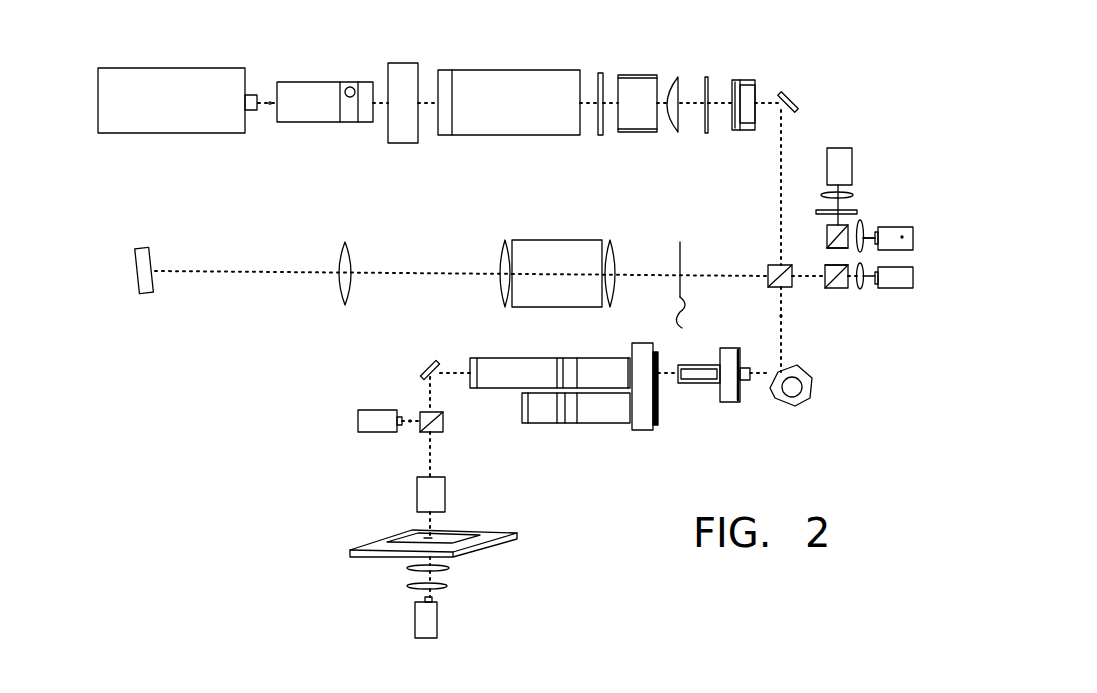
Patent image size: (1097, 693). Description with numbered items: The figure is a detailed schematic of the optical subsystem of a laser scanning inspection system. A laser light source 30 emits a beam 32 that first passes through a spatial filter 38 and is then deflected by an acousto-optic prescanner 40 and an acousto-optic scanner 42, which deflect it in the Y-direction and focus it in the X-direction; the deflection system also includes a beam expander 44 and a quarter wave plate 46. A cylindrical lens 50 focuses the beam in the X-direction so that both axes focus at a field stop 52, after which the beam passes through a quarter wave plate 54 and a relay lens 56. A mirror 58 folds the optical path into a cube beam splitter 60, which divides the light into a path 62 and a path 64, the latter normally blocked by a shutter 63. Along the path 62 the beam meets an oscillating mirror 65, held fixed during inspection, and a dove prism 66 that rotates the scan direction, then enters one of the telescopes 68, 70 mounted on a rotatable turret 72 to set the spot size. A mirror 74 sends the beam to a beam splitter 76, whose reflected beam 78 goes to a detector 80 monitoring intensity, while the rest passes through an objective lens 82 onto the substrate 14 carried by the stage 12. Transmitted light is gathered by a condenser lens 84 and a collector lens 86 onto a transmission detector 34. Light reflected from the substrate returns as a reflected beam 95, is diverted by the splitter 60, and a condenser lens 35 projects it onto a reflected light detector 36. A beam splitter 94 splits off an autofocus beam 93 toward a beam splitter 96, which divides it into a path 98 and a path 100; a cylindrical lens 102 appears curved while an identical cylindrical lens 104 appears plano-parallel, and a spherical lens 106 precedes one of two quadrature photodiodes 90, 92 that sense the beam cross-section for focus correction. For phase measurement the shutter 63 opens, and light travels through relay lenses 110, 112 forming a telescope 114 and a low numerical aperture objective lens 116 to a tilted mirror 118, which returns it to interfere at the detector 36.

The stage 12 is at (507, 543).
The substrate 14 is at (452, 531).
The light source 30 is at (222, 120).
The beam 32 is at (270, 100).
The transmission detector 34 is at (432, 614).
The condenser lens 35 is at (860, 289).
The reflected light detector 36 is at (893, 286).
The spatial filter 38 is at (325, 123).
The acousto-optic prescanner 40 is at (408, 72).
The acousto-optic scanner 42 is at (643, 125).
The beam expander 44 is at (501, 75).
The quarter wave plate 46 is at (601, 73).
The cylindrical lens 50 is at (678, 77).
The field stop 52 is at (706, 117).
The quarter wave plate 54 is at (747, 127).
The relay lens 56 is at (747, 85).
The mirror 58 is at (797, 104).
The cube beam splitter 60 is at (774, 265).
The path 62 is at (775, 318).
The shutter 63 is at (695, 316).
The path 64 is at (727, 275).
The oscillating mirror 65 is at (795, 404).
The dove prism 66 is at (728, 400).
The telescope 68 is at (550, 365).
The telescope 70 is at (550, 420).
The rotatable turret 72 is at (643, 430).
The mirror 74 is at (423, 368).
The beam splitter 76 is at (427, 432).
The beam 78 is at (408, 417).
The detector 80 is at (392, 412).
The objective lens 82 is at (417, 493).
The condenser lens 84 is at (407, 570).
The collector lens 86 is at (408, 588).
The quadrature photodiode 90 is at (827, 167).
The quadrature photodiode 92 is at (913, 237).
The autofocus beam 93 is at (813, 280).
The beam splitter 94 is at (827, 288).
The reflected beam 95 is at (825, 277).
The beam splitter 96 is at (827, 240).
The path 98 is at (858, 222).
The path 100 is at (849, 250).
The cylindrical lens 102 is at (864, 225).
The cylindrical lens 104 is at (816, 212).
The spherical lens 106 is at (820, 202).
The relay lens 110 is at (610, 240).
The relay lens 112 is at (508, 240).
The telescope 114 is at (553, 257).
The low numerical aperture objective lens 116 is at (345, 242).
The tilted mirror 118 is at (137, 278).